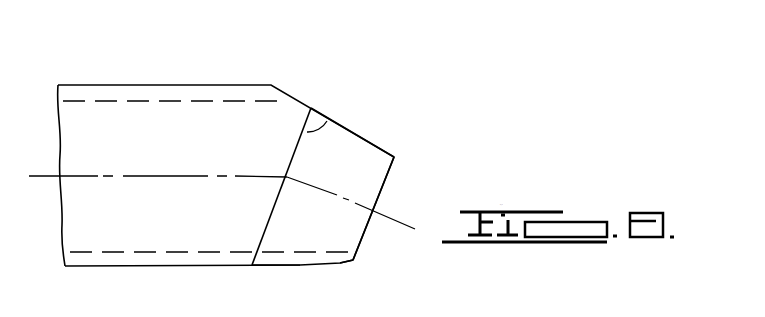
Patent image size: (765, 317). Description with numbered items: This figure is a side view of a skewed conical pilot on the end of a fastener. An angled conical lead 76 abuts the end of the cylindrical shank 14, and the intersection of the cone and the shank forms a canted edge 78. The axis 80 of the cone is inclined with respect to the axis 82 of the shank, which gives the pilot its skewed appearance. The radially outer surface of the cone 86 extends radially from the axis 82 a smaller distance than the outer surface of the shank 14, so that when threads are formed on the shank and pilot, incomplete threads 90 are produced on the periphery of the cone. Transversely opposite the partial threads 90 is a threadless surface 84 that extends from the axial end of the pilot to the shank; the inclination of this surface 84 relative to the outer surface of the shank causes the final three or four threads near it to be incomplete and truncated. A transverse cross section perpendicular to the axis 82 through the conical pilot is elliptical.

The cylindrical shank 14 is at (138, 110).
The axis of the shank 82 is at (172, 176).
The canted edge 78 is at (327, 121).
The threadless surface 84 is at (363, 136).
The angled conical lead 76 is at (370, 157).
The axis of the cone 80 is at (406, 216).
The radially outer surface of the cone 86 is at (307, 266).
The incomplete threads 90 is at (332, 264).